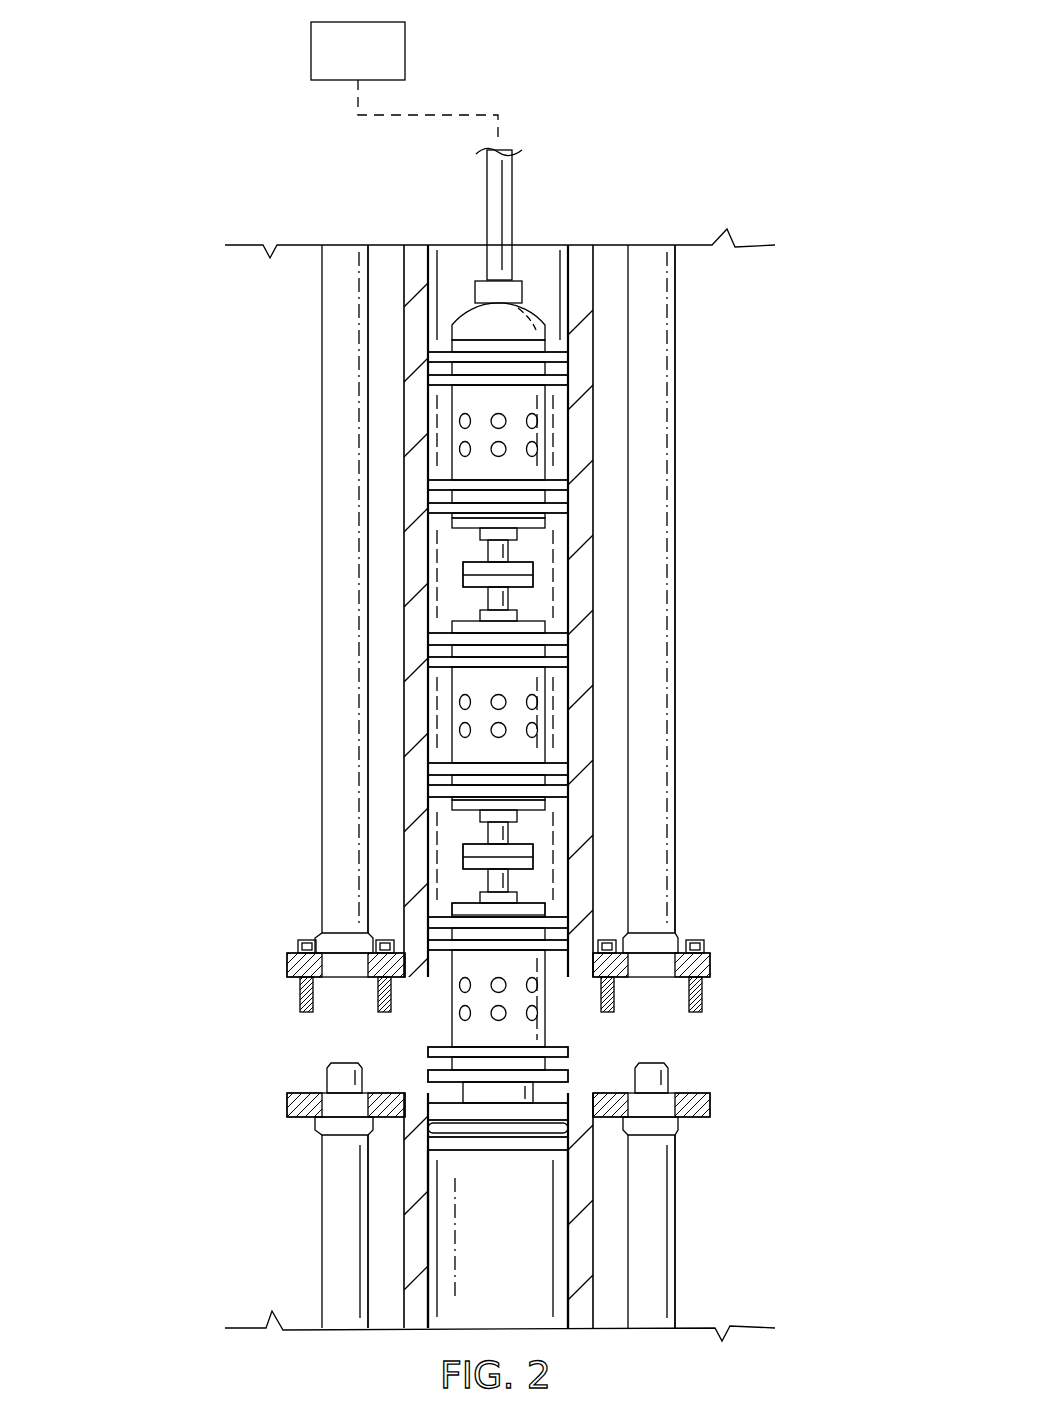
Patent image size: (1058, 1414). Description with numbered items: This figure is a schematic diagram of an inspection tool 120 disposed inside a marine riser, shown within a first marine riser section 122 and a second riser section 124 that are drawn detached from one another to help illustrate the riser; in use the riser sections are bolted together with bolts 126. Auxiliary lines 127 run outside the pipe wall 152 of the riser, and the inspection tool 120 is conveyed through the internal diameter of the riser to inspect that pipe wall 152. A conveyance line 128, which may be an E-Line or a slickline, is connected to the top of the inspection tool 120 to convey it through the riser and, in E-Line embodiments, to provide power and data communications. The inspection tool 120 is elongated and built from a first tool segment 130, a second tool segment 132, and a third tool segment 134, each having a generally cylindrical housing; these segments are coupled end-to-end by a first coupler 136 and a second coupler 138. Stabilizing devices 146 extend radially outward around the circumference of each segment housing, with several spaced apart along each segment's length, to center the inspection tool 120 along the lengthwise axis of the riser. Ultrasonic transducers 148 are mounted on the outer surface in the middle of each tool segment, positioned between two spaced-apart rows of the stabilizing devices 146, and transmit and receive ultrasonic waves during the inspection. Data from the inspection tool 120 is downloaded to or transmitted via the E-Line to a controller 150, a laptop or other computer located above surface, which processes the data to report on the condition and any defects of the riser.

The inspection tool 120 is at (500, 625).
The first marine riser section 122 is at (412, 329).
The second riser section 124 is at (520, 1255).
The bolts 126 is at (300, 1000).
The auxiliary lines 127 is at (330, 598).
The conveyance line 128 is at (492, 172).
The first tool segment 130 is at (500, 548).
The second tool segment 132 is at (500, 836).
The third tool segment 134 is at (549, 907).
The first coupler 136 is at (463, 570).
The second coupler 138 is at (463, 857).
The stabilizing devices 146 is at (432, 487).
The ultrasonic transducers 148 is at (462, 421).
The controller 150 is at (381, 65).
The pipe wall 152 is at (565, 280).